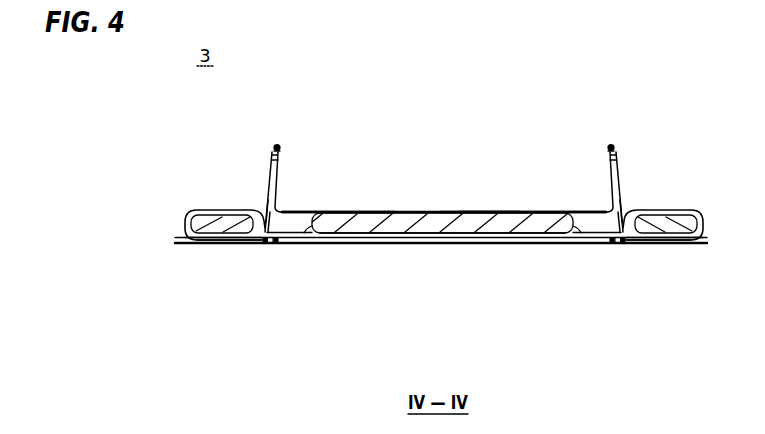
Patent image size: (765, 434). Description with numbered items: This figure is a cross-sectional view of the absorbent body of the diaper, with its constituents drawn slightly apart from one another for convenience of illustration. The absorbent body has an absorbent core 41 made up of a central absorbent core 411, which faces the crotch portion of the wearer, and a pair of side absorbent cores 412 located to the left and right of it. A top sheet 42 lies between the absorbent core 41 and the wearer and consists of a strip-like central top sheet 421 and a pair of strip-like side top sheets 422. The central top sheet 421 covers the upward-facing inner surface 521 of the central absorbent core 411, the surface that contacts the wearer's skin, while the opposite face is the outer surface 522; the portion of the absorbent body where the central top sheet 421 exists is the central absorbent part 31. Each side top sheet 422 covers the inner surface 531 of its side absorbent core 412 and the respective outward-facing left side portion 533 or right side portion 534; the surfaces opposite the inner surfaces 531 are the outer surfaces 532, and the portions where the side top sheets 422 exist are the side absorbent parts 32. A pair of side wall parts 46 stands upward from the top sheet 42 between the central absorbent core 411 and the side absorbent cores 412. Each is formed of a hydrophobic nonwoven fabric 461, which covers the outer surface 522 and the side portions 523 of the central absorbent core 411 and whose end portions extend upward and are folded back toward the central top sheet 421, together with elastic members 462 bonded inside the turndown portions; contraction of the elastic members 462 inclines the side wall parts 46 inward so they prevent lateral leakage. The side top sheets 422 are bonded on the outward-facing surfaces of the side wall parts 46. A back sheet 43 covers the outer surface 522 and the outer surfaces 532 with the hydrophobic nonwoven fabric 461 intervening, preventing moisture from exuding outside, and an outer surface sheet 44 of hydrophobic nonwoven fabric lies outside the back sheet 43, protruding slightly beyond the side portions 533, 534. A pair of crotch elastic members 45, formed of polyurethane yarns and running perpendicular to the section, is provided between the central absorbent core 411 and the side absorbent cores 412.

The central absorbent part 31 is at (432, 258).
The side absorbent parts 32 is at (231, 245).
The absorbent core 41 is at (468, 148).
The central absorbent core 411 is at (484, 211).
The side absorbent cores 412 is at (230, 222).
The top sheet 42 is at (400, 148).
The central top sheet 421 is at (386, 211).
The side top sheets 422 is at (248, 211).
The back sheet 43 is at (382, 240).
The outer surface sheet 44 is at (418, 240).
The crotch elastic members 45 is at (271, 250).
The side wall parts 46 is at (280, 142).
The hydrophobic nonwoven fabric 461 is at (266, 170).
The elastic members 462 is at (288, 149).
The inner surface 521 is at (540, 211).
The outer surface 522 is at (522, 240).
The side portions 523 is at (301, 241).
The inner surfaces 531 is at (212, 211).
The outer surfaces 532 is at (212, 244).
The left side portion 533 is at (182, 230).
The right side portion 534 is at (705, 230).